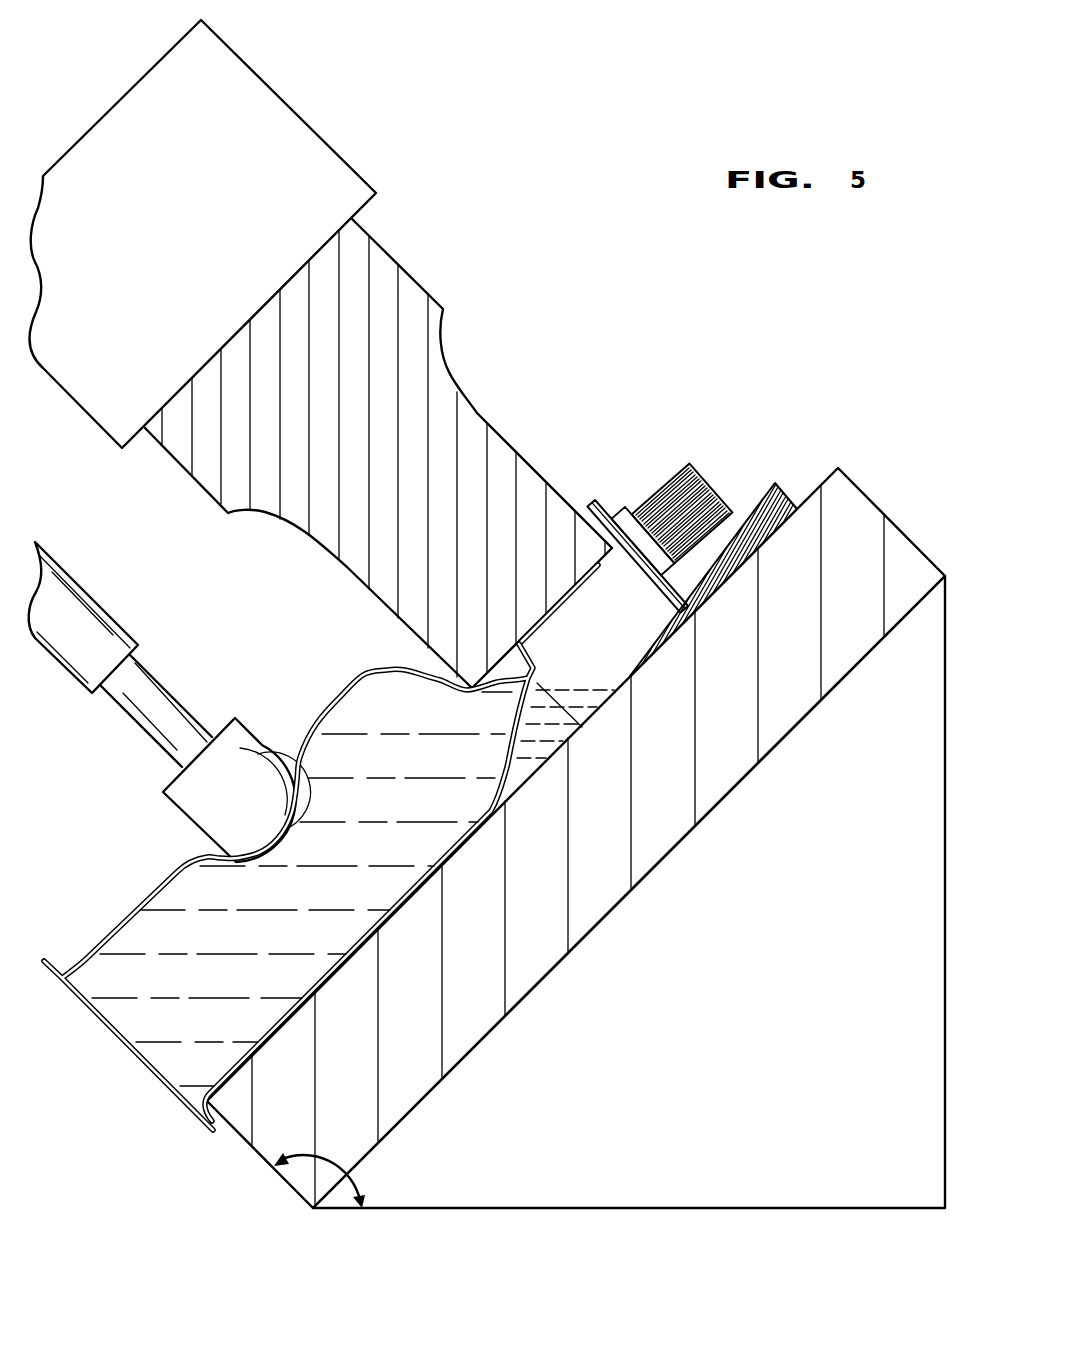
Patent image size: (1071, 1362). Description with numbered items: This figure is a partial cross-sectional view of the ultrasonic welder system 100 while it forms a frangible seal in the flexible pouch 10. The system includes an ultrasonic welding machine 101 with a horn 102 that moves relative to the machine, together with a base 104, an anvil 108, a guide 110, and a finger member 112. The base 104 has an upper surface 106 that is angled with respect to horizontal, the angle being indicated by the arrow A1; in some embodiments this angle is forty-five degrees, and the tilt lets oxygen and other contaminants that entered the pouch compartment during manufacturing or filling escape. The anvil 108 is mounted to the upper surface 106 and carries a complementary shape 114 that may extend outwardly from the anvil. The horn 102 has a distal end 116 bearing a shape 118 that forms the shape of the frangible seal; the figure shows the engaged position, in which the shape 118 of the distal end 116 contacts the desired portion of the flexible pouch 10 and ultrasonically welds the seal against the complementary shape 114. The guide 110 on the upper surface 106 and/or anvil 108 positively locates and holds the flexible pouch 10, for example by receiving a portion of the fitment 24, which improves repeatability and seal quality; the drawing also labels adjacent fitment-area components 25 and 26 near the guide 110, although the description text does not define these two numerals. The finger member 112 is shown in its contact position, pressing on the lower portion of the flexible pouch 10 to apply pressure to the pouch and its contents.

The flexible pouch 10 is at (226, 1140).
The fitment 24 is at (634, 448).
The washer 25 is at (613, 488).
The nut 26 is at (722, 483).
The ultrasonic welder system 100 is at (536, 120).
The ultrasonic welding machine 101 is at (296, 146).
The horn 102 is at (503, 418).
The base 104 is at (693, 1172).
The upper surface 106 is at (815, 478).
The anvil 108 is at (657, 633).
The guide 110 is at (700, 595).
The finger member 112 is at (150, 740).
The complementary shape 114 is at (553, 716).
The distal end 116 is at (516, 648).
The shape 118 is at (513, 660).
The arrow A1 is at (325, 1150).